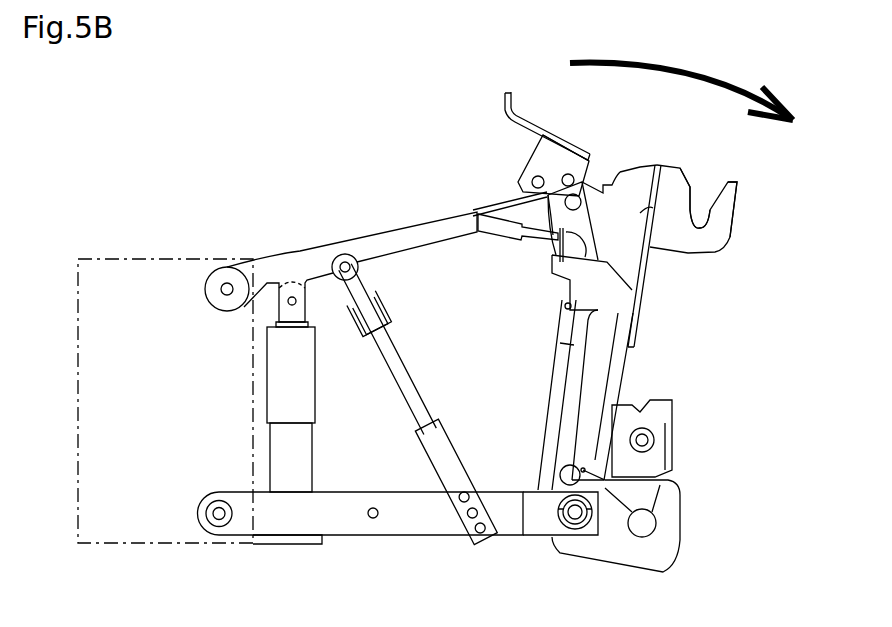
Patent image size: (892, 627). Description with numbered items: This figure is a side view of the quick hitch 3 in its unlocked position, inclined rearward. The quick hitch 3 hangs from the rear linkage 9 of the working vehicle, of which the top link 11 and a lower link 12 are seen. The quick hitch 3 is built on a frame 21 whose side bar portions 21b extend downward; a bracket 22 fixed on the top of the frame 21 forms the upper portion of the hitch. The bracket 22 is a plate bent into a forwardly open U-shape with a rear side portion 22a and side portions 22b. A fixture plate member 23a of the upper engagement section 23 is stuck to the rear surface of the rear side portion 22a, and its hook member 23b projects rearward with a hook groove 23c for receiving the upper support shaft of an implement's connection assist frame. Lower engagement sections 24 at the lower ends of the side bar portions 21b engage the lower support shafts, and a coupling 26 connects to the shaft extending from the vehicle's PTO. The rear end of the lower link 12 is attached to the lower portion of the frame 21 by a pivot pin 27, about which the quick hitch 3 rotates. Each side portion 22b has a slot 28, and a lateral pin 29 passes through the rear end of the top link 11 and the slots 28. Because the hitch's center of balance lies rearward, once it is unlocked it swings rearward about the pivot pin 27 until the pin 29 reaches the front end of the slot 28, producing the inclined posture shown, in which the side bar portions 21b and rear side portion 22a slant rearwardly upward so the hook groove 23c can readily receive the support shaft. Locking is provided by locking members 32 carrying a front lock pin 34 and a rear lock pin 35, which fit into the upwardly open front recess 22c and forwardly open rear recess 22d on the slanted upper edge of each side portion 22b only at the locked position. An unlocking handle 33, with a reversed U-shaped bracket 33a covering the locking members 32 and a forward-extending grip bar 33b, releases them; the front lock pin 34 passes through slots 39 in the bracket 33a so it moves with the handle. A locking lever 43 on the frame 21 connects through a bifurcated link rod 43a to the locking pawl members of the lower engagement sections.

The quick hitch 3 is at (813, 128).
The linkage 9 is at (352, 190).
The top link 11 is at (392, 232).
The lower link 12 is at (418, 498).
The frame 21 is at (633, 365).
The side bar portion 21b is at (602, 388).
The bracket 22 is at (735, 315).
The rear side portion 22a is at (643, 283).
The side portion 22b is at (610, 252).
The front recess 22c is at (610, 186).
The rear recess 22d is at (636, 170).
The upper engagement section 23 is at (757, 222).
The fixture plate member 23a is at (700, 185).
The hook member 23b is at (746, 178).
The hook groove 23c is at (697, 223).
The lower engagement section 24 is at (680, 527).
The coupling 26 is at (685, 440).
The pivot pin 27 is at (577, 538).
The slot 28 is at (655, 218).
The pin 29 is at (568, 212).
The locking member 32 is at (477, 210).
The unlocking handle 33 is at (526, 100).
The bracket 33a is at (547, 142).
The grip bar 33b is at (506, 97).
The front lock pin 34 is at (564, 202).
The rear lock pin 35 is at (574, 174).
The slot 39 is at (533, 179).
The locking lever 43 is at (496, 236).
The link rod 43a is at (546, 405).